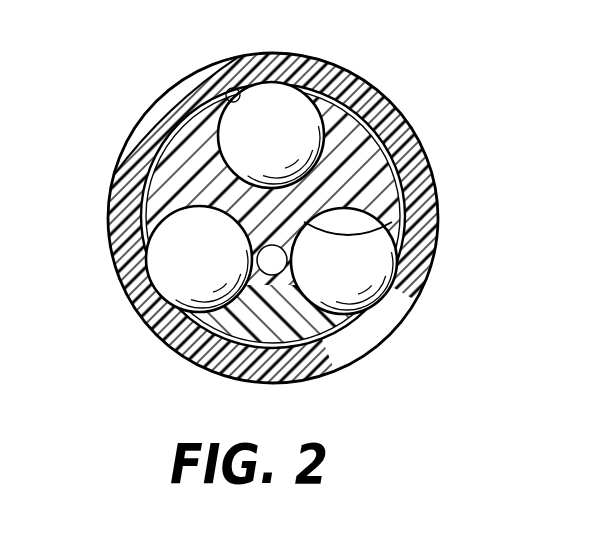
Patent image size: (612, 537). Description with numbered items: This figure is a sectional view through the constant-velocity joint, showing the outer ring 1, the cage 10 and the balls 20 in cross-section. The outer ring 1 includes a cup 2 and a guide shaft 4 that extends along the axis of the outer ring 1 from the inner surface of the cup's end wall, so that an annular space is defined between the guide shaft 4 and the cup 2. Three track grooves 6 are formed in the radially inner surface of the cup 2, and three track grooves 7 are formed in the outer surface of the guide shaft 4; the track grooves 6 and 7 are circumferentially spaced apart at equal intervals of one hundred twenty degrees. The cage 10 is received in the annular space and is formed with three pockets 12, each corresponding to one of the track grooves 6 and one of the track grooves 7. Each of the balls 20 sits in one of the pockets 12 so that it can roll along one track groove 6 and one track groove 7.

The outer ring 1 is at (162, 91).
The cup 2 is at (197, 84).
The guide shaft 4 is at (400, 148).
The track grooves 6 is at (287, 85).
The track grooves 7 is at (305, 190).
The cage 10 is at (117, 175).
The pockets 12 is at (236, 84).
The balls 20 is at (294, 108).